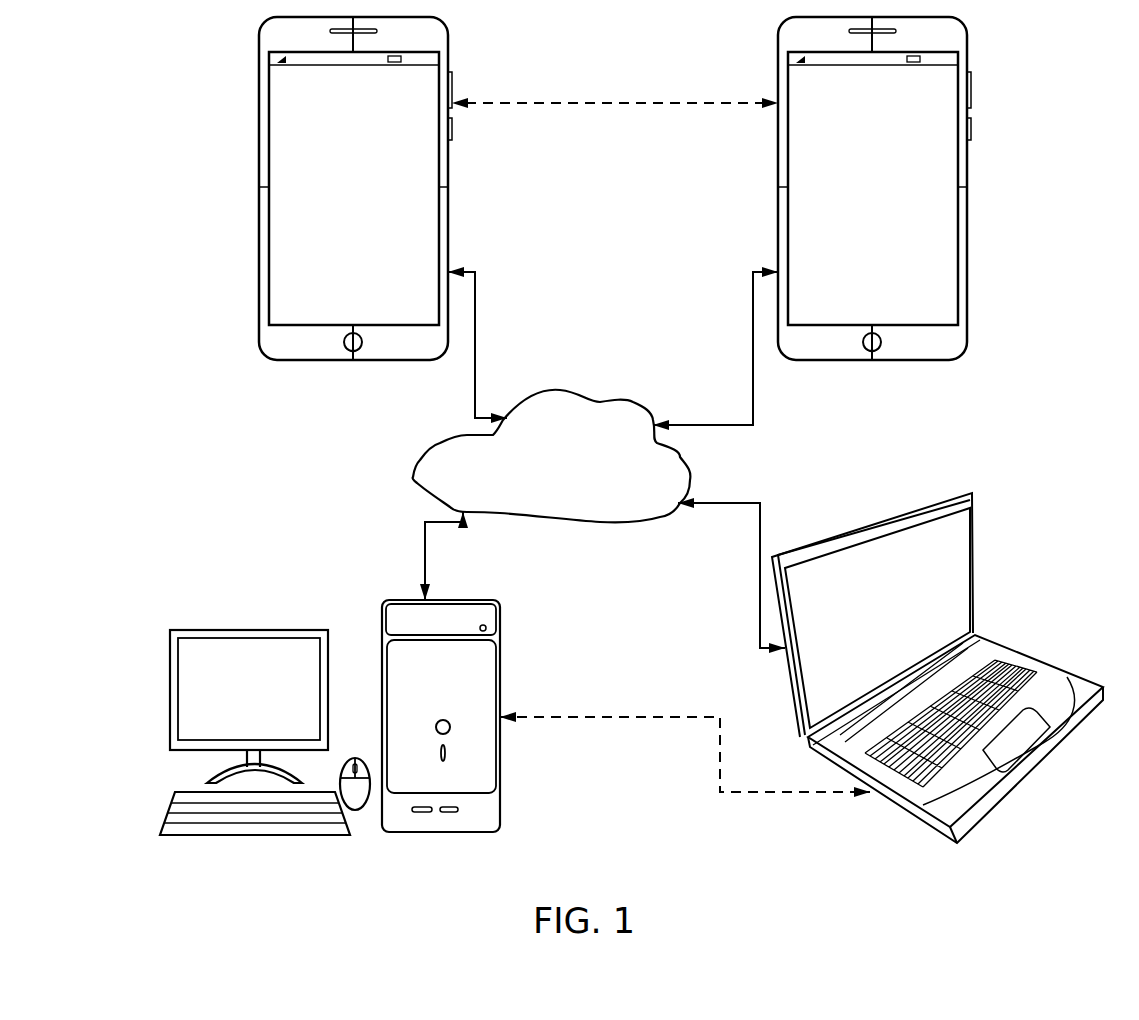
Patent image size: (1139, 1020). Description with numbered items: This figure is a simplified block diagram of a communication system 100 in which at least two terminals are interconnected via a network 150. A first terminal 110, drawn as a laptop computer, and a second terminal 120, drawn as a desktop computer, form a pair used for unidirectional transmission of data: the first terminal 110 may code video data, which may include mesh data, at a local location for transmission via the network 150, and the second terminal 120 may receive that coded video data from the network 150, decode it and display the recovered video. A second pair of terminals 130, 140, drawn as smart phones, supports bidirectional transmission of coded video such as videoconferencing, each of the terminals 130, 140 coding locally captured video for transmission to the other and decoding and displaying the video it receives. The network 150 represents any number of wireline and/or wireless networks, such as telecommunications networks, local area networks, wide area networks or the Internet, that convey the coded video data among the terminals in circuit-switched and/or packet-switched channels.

The communication system 100 is at (190, 83).
The first terminal 110 is at (973, 547).
The second terminal 120 is at (500, 793).
The terminal 130 is at (321, 188).
The terminal 140 is at (778, 133).
The network 150 is at (532, 453).